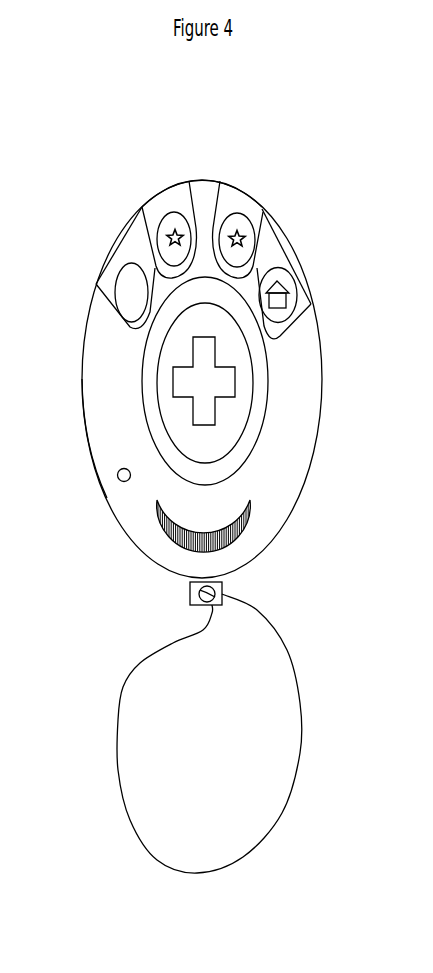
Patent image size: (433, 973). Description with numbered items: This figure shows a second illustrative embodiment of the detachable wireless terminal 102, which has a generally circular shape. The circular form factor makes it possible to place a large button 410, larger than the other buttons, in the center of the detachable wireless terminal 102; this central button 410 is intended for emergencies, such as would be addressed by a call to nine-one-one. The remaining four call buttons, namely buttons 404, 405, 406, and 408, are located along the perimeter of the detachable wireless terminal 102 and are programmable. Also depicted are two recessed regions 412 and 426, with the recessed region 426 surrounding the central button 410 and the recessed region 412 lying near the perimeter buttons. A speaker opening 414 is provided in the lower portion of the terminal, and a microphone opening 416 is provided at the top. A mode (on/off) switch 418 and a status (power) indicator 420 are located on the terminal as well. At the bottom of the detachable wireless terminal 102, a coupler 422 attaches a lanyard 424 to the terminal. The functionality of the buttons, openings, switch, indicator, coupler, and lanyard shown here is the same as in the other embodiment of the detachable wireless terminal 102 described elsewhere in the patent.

The detachable wireless terminal 102 is at (320, 105).
The button 404 is at (288, 290).
The button 405 is at (232, 225).
The button 406 is at (175, 225).
The button 408 is at (128, 309).
The button 410 is at (230, 408).
The recessed region 412 is at (117, 250).
The speaker opening 414 is at (260, 525).
The microphone opening 416 is at (210, 180).
The mode (on/off) switch 418 is at (85, 447).
The status (power) indicator 420 is at (122, 490).
The coupler 422 is at (190, 594).
The lanyard 424 is at (119, 687).
The recessed region 426 is at (257, 396).